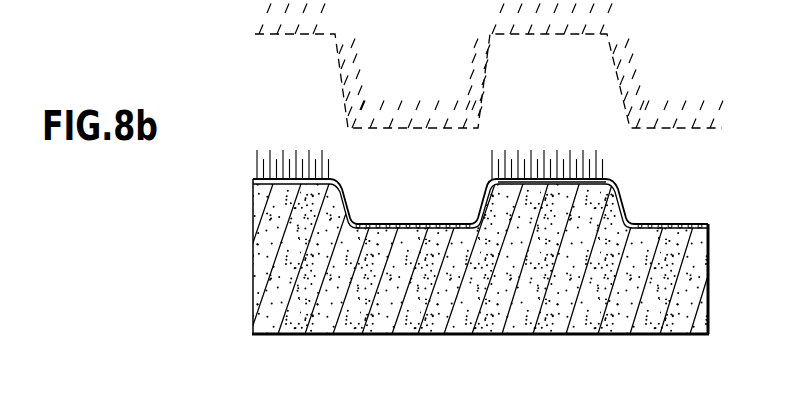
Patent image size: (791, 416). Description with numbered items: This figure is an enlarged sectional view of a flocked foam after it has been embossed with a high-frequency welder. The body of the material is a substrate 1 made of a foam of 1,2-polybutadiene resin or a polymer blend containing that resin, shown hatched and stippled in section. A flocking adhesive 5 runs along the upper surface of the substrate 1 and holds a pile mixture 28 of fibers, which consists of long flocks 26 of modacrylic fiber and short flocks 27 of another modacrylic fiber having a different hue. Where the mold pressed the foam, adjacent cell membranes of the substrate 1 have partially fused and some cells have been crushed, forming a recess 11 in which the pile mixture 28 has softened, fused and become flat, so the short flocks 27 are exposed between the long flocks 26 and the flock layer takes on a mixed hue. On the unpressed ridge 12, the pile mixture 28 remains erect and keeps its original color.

The substrate 1 is at (456, 306).
The flocking adhesive 5 is at (712, 231).
The recess 11 is at (395, 232).
The ridge 12 is at (545, 190).
The long flocks 26 is at (524, 165).
The short flocks 27 is at (549, 165).
The pile mixture 28 is at (547, 121).